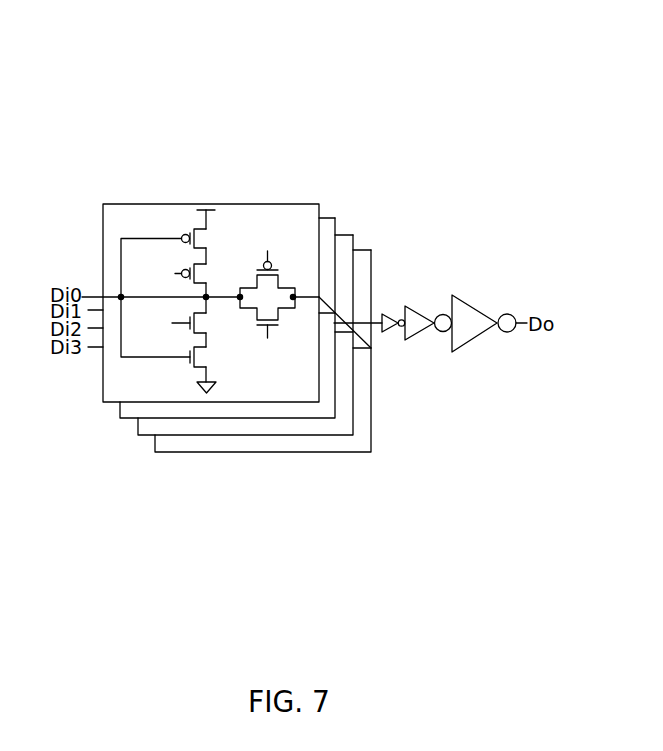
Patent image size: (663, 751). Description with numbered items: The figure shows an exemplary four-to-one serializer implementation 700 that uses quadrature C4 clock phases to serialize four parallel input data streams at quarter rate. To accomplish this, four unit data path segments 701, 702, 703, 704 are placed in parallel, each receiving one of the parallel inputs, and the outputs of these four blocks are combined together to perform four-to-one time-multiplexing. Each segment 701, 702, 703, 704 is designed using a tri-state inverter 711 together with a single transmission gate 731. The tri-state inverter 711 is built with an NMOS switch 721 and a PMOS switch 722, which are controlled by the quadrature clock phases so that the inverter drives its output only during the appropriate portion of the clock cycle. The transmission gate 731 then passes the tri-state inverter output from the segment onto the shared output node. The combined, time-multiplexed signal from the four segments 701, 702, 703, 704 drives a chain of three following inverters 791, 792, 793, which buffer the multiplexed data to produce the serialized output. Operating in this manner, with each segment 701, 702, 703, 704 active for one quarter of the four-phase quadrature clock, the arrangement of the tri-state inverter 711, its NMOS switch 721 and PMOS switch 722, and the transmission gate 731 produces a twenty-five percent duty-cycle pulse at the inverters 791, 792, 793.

The 4:1 serializer implementation 700 is at (191, 118).
The segment 701 is at (321, 406).
The segment 702 is at (334, 421).
The segment 703 is at (353, 437).
The segment 704 is at (371, 454).
The tri-state inverter 711 is at (203, 178).
The NMOS switch 721 is at (214, 326).
The PMOS switch 722 is at (216, 268).
The transmission gate 731 is at (292, 275).
The inverter 791 is at (387, 334).
The inverter 792 is at (423, 334).
The inverter 793 is at (478, 340).